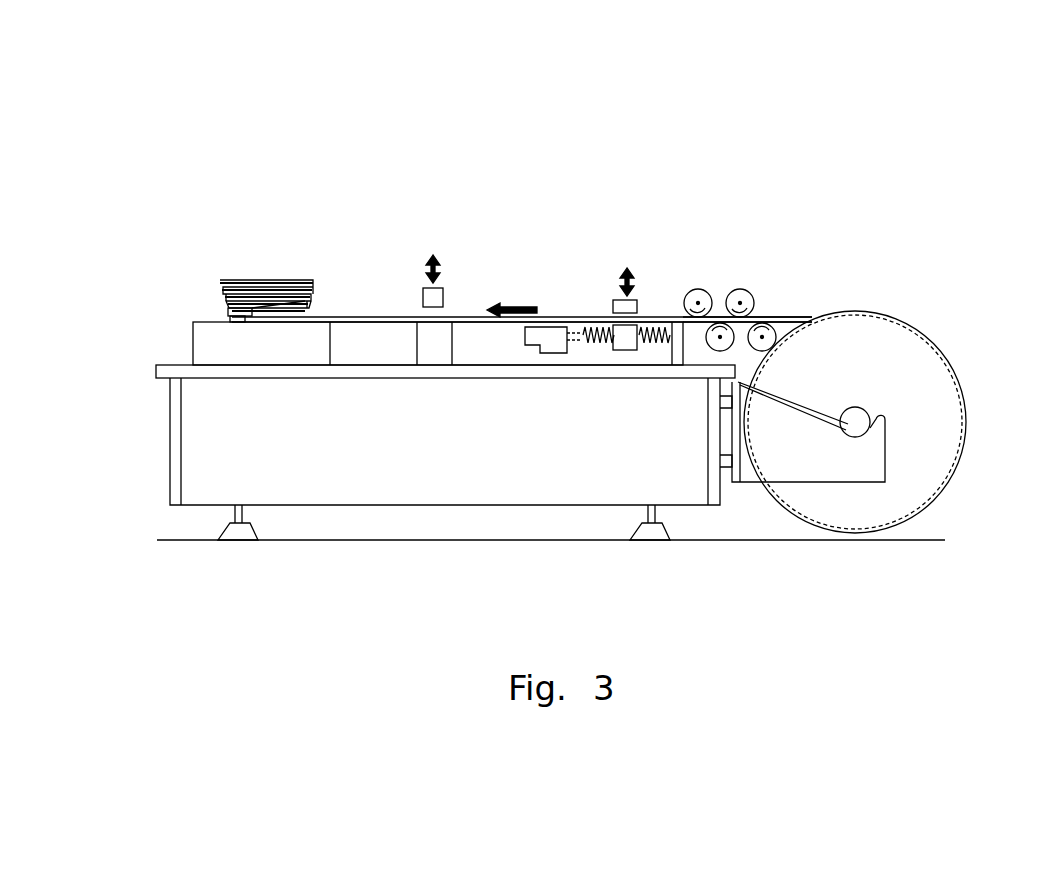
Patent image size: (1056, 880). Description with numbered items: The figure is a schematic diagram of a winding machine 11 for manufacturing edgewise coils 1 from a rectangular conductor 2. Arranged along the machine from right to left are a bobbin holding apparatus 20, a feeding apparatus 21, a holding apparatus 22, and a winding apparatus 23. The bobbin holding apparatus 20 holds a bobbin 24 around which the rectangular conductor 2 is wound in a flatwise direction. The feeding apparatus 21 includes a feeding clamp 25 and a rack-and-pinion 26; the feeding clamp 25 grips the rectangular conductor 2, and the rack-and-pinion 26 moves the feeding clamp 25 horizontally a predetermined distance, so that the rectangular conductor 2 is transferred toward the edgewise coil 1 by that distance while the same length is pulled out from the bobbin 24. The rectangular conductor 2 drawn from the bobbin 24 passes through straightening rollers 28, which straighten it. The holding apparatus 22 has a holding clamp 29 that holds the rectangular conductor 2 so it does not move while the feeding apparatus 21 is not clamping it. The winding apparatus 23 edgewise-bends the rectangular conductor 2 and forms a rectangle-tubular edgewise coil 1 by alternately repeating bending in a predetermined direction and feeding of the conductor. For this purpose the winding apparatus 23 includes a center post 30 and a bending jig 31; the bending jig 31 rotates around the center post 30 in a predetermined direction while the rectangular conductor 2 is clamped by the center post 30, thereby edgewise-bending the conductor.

The edgewise coil 1 is at (298, 282).
The rectangular conductor 2 is at (795, 290).
The winding machine 11 is at (923, 135).
The bobbin holding apparatus 20 is at (864, 243).
The feeding apparatus 21 is at (633, 243).
The holding apparatus 22 is at (440, 240).
The winding apparatus 23 is at (270, 240).
The bobbin 24 is at (920, 372).
The feeding clamp 25 is at (637, 307).
The rack-and-pinion 26 is at (655, 350).
The straightening rollers 28 is at (738, 288).
The holding clamp 29 is at (445, 296).
The center post 30 is at (232, 311).
The bending jig 31 is at (236, 322).